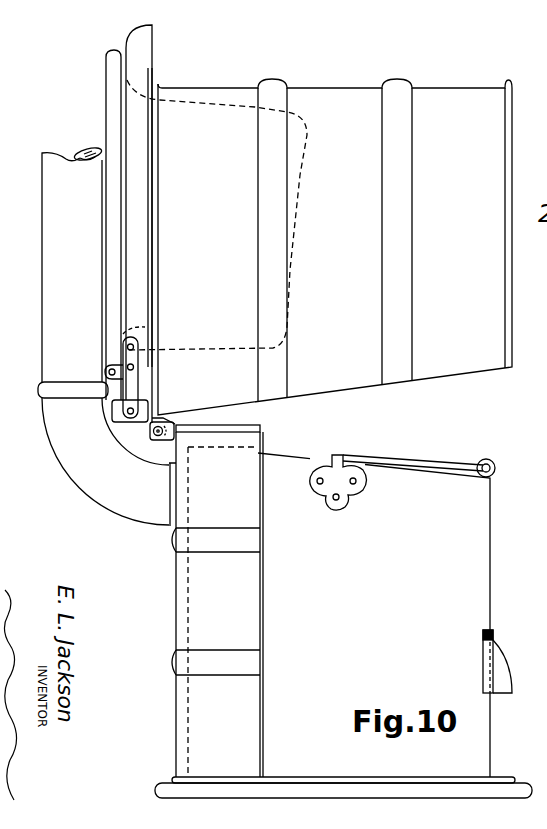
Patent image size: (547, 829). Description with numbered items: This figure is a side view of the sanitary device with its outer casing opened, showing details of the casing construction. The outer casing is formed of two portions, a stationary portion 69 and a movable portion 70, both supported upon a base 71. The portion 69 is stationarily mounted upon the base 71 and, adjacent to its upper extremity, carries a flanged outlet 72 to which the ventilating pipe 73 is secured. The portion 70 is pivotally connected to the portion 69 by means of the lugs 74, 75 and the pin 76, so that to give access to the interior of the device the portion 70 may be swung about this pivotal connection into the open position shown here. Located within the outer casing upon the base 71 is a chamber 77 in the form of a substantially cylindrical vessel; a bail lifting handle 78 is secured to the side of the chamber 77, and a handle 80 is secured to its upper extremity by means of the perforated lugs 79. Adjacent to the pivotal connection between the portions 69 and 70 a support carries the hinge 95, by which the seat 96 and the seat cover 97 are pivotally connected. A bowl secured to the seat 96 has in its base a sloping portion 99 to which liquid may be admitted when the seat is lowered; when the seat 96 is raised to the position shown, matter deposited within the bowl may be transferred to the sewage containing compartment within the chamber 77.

The stationary casing portion 69 is at (200, 603).
The pivoted casing portion 70 is at (468, 365).
The base 71 is at (175, 780).
The flanged outlet 72 is at (170, 498).
The ventilating pipe 73 is at (103, 335).
The lug 74 is at (163, 443).
The lug 75 is at (163, 420).
The pin 76 is at (154, 432).
The chamber 77 is at (490, 567).
The bail lifting handle 78 is at (507, 678).
The perforated lug 79 is at (334, 454).
The handle 80 is at (446, 461).
The hinge 95 is at (121, 357).
The seat 96 is at (145, 61).
The seat cover 97 is at (111, 68).
The sloping portion 99 is at (297, 187).